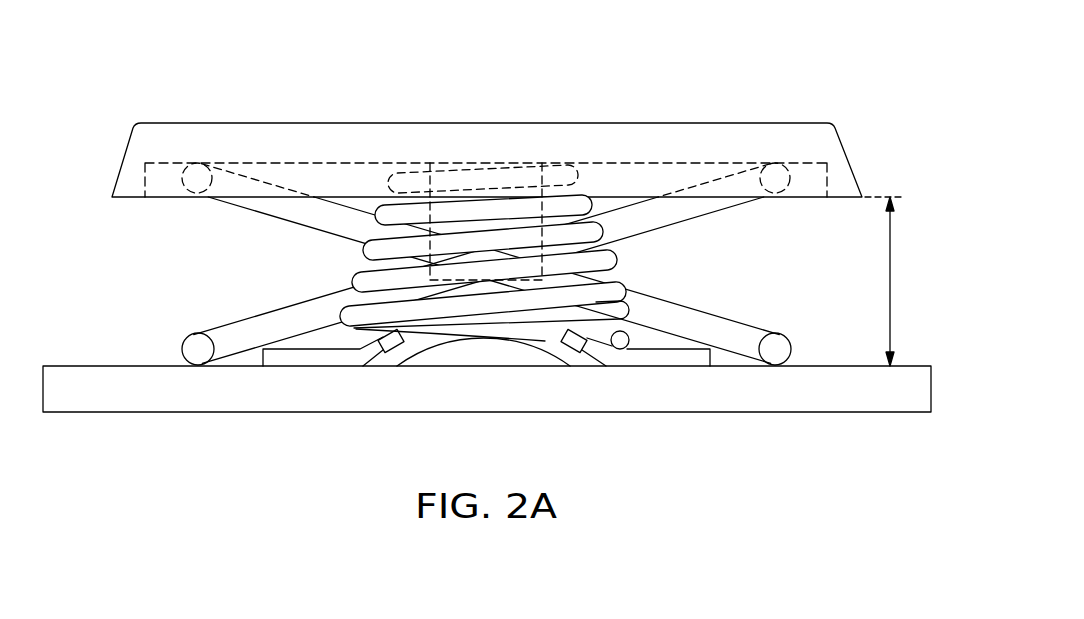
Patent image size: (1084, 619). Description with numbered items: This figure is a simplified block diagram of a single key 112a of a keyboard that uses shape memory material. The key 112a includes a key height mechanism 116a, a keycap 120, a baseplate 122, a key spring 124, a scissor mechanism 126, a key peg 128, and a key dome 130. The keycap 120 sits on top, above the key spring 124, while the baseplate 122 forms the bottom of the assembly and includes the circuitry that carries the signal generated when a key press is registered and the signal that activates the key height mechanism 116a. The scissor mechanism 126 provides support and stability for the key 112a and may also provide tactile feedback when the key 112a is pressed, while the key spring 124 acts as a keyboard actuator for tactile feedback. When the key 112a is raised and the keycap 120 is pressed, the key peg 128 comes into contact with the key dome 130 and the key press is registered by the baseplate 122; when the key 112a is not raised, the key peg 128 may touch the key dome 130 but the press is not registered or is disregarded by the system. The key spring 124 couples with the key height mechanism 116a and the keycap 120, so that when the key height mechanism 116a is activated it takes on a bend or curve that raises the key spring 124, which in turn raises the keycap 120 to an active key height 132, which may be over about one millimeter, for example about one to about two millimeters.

The key 112a is at (758, 81).
The keycap 120 is at (217, 122).
The baseplate 122 is at (182, 402).
The key spring 124 is at (377, 228).
The scissor mechanism 126 is at (233, 322).
The key peg 128 is at (528, 222).
The key dome 130 is at (524, 358).
The key height mechanism 116a is at (378, 352).
The active key height 132 is at (896, 282).